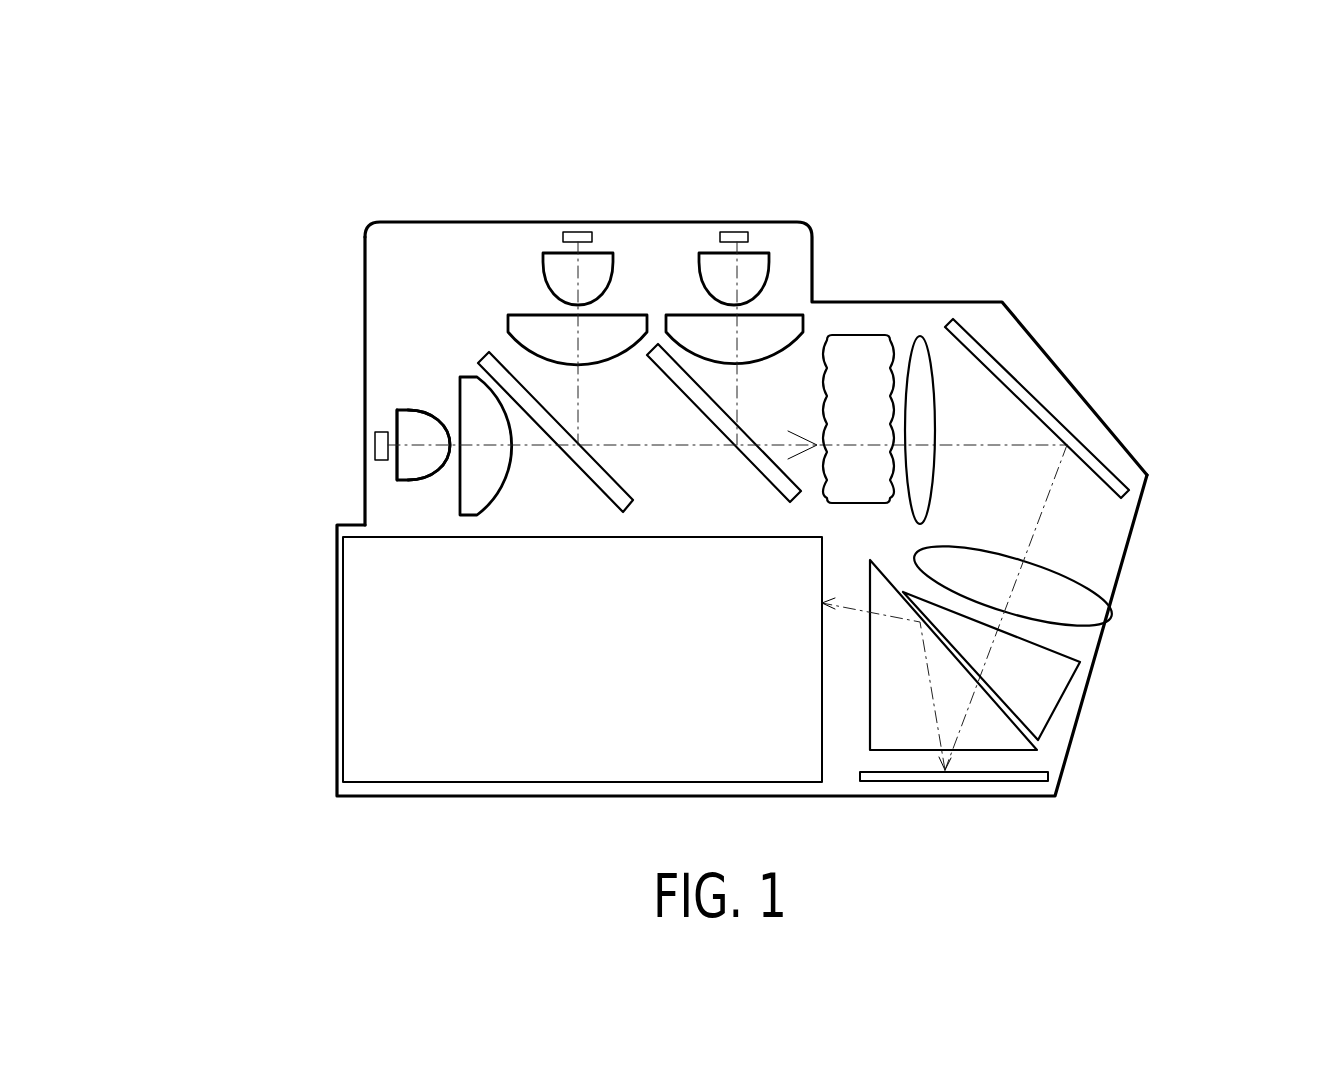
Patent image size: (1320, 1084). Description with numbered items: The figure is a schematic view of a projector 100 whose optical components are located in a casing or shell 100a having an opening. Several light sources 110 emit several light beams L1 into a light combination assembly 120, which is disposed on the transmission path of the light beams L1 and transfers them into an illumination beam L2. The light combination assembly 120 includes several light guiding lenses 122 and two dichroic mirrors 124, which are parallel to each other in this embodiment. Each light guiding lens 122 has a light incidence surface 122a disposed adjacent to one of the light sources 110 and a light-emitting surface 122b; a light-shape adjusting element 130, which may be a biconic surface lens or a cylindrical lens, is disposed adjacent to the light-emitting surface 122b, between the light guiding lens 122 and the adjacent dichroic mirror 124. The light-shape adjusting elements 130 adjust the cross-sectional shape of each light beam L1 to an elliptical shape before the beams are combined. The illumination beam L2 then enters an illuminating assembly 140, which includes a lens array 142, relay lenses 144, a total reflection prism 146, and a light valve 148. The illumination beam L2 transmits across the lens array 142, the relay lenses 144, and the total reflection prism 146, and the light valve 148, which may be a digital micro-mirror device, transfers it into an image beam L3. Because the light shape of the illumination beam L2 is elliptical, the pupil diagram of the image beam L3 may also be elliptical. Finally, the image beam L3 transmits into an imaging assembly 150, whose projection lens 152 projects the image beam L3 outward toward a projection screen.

The projector 100 is at (215, 214).
The casing or shell 100a is at (363, 302).
The light sources 110 is at (373, 452).
The light combination assembly 120 is at (442, 200).
The light guiding lenses 122 is at (397, 420).
The light incidence surface 122a is at (393, 473).
The light-emitting surface 122b is at (450, 417).
The dichroic mirrors 124 is at (475, 360).
The light-shape adjusting elements 130 is at (458, 510).
The illuminating assembly 140 is at (1127, 373).
The lens array 142 is at (870, 333).
The relay lenses 144 is at (920, 472).
The total reflection prism 146 is at (1043, 680).
The light valve 148 is at (1037, 770).
The imaging assembly 150 is at (488, 810).
The projection lens 152 is at (560, 782).
The light beams L1 is at (693, 445).
The illumination beam L2 is at (1005, 625).
The image beam L3 is at (857, 605).